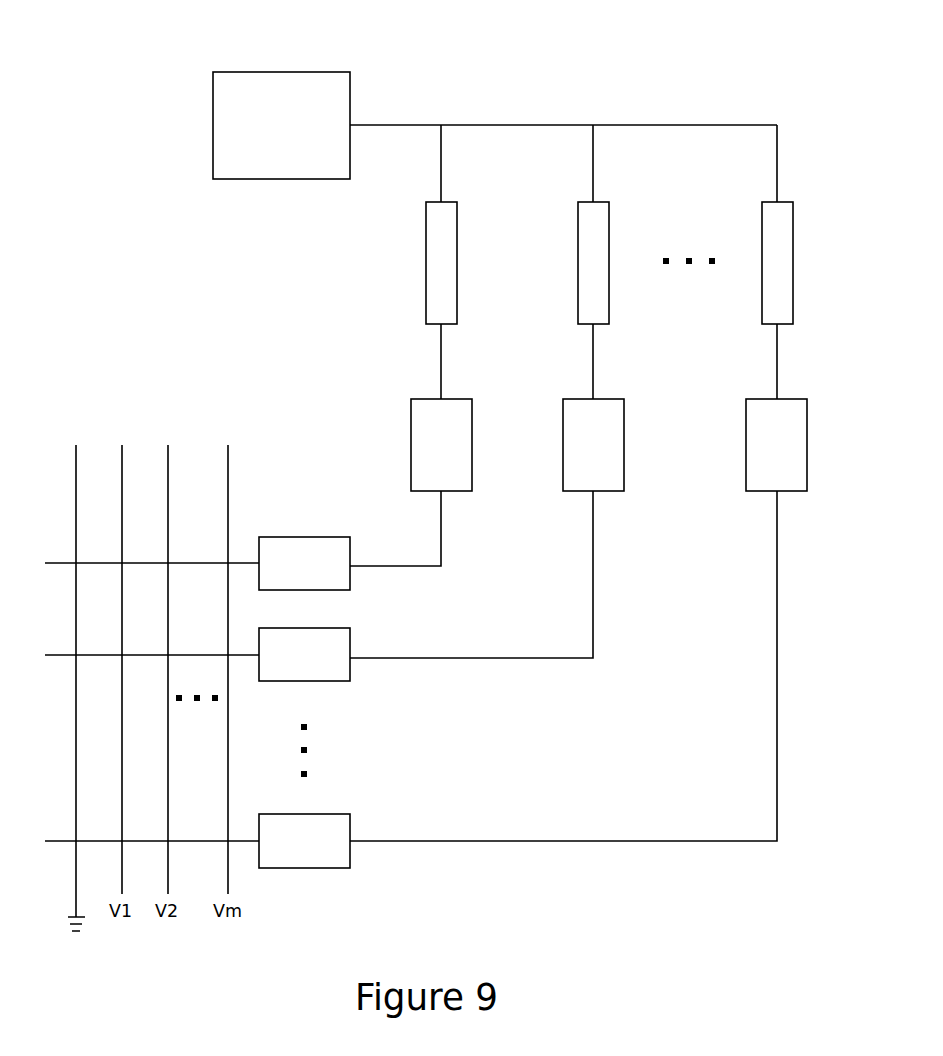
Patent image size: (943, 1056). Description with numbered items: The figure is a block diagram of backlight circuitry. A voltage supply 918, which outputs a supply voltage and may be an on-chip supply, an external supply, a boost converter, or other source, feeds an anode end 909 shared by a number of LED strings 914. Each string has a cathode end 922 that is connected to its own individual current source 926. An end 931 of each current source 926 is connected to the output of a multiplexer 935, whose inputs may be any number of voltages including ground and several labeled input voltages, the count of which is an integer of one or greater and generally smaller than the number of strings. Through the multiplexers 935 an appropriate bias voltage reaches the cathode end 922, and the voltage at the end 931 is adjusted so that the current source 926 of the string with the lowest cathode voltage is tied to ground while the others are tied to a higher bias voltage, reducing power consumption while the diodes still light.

The voltage supply 918 is at (290, 72).
The anode end 909 is at (492, 125).
The LED strings 914 is at (460, 258).
The cathode end 922 is at (443, 365).
The current source 926 is at (476, 443).
The multiplexer 935 is at (300, 537).
The end of the current source 931 is at (430, 568).